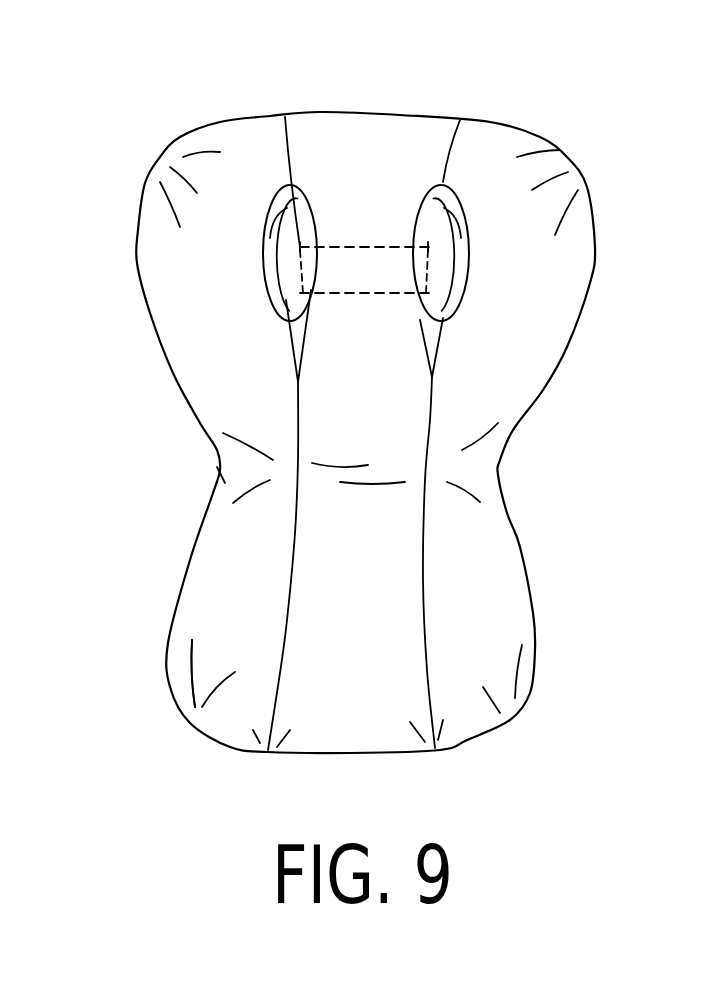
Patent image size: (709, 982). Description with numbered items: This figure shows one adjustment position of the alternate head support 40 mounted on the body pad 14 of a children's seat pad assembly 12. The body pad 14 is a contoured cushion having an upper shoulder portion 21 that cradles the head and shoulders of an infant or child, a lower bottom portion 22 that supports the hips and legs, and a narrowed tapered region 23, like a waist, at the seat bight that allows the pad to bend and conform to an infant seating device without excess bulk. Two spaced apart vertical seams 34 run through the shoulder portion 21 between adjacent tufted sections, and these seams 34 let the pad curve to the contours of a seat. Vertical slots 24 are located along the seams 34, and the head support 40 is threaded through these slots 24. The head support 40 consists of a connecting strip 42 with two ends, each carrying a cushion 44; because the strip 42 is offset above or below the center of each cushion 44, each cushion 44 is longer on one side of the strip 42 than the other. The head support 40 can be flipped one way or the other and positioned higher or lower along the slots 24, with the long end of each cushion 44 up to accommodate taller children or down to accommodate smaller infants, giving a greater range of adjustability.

The seat pad assembly 12 is at (258, 92).
The body pad 14 is at (313, 143).
The upper shoulder portion 21 is at (173, 285).
The lower bottom portion 22 is at (208, 590).
The narrowed tapered region 23 is at (217, 467).
The slots 24 is at (300, 332).
The vertical seams 34 is at (300, 437).
The head support 40 is at (298, 208).
The connecting strip 42 is at (343, 260).
The cushions 44 is at (453, 250).